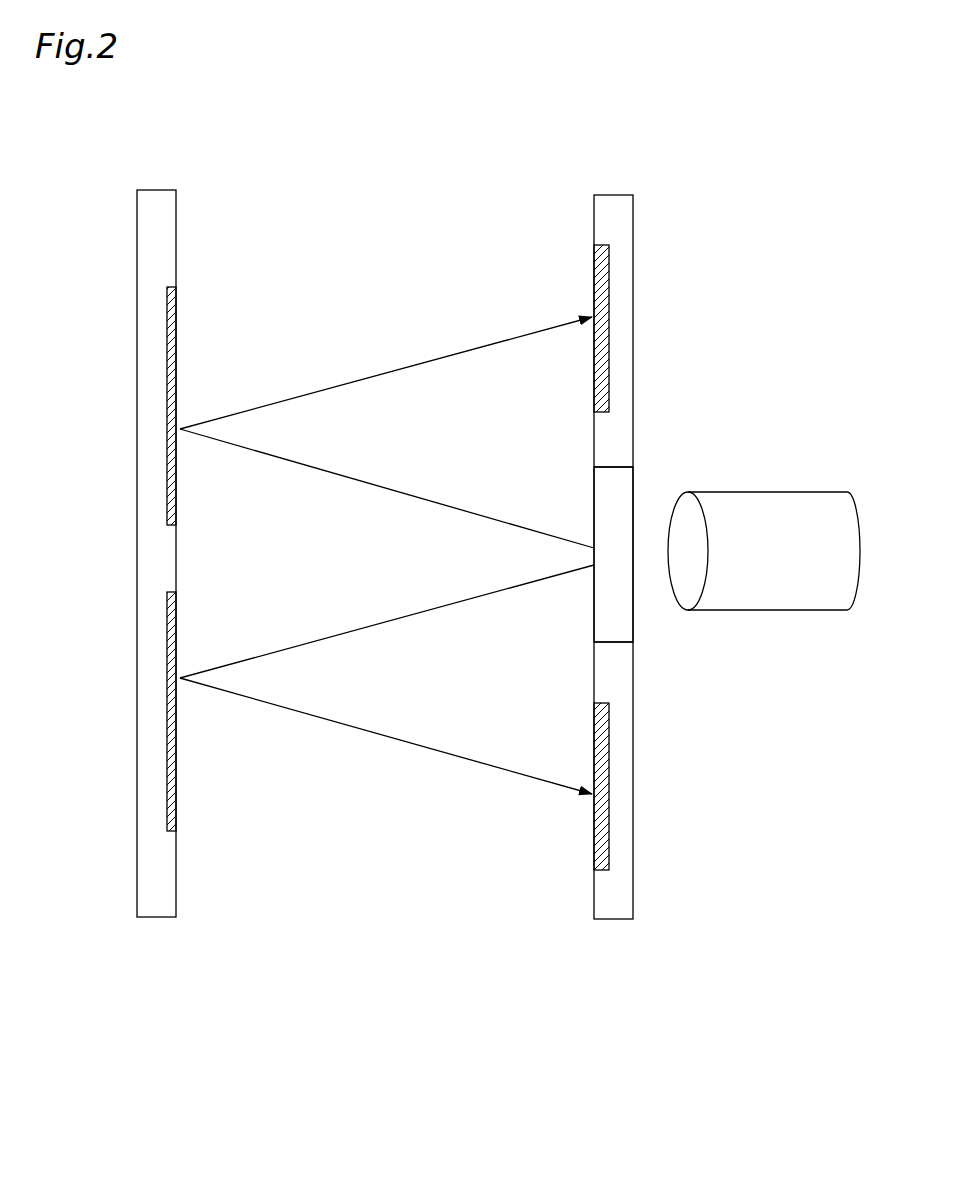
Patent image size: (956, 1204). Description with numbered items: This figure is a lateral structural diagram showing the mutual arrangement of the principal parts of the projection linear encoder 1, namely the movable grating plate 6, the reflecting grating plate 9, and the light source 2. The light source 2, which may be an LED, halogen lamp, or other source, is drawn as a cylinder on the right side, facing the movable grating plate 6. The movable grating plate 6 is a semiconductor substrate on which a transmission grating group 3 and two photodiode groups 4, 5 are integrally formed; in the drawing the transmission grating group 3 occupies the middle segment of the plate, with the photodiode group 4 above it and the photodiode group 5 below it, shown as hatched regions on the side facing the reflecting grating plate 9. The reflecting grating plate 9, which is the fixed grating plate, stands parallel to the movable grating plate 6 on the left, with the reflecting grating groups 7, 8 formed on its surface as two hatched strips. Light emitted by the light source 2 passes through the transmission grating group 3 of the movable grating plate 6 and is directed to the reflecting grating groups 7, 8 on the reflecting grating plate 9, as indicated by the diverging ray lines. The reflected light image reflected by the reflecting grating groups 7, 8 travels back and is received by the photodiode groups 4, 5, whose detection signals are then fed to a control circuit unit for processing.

The projection linear encoder 1 is at (736, 238).
The light source 2 is at (774, 620).
The transmission grating group 3 is at (619, 610).
The photodiode group 4 is at (588, 252).
The photodiode group 5 is at (588, 842).
The movable grating plate 6 is at (642, 906).
The reflecting grating group 7 is at (179, 335).
The reflecting grating group 8 is at (180, 779).
The reflecting grating plate 9 is at (163, 922).